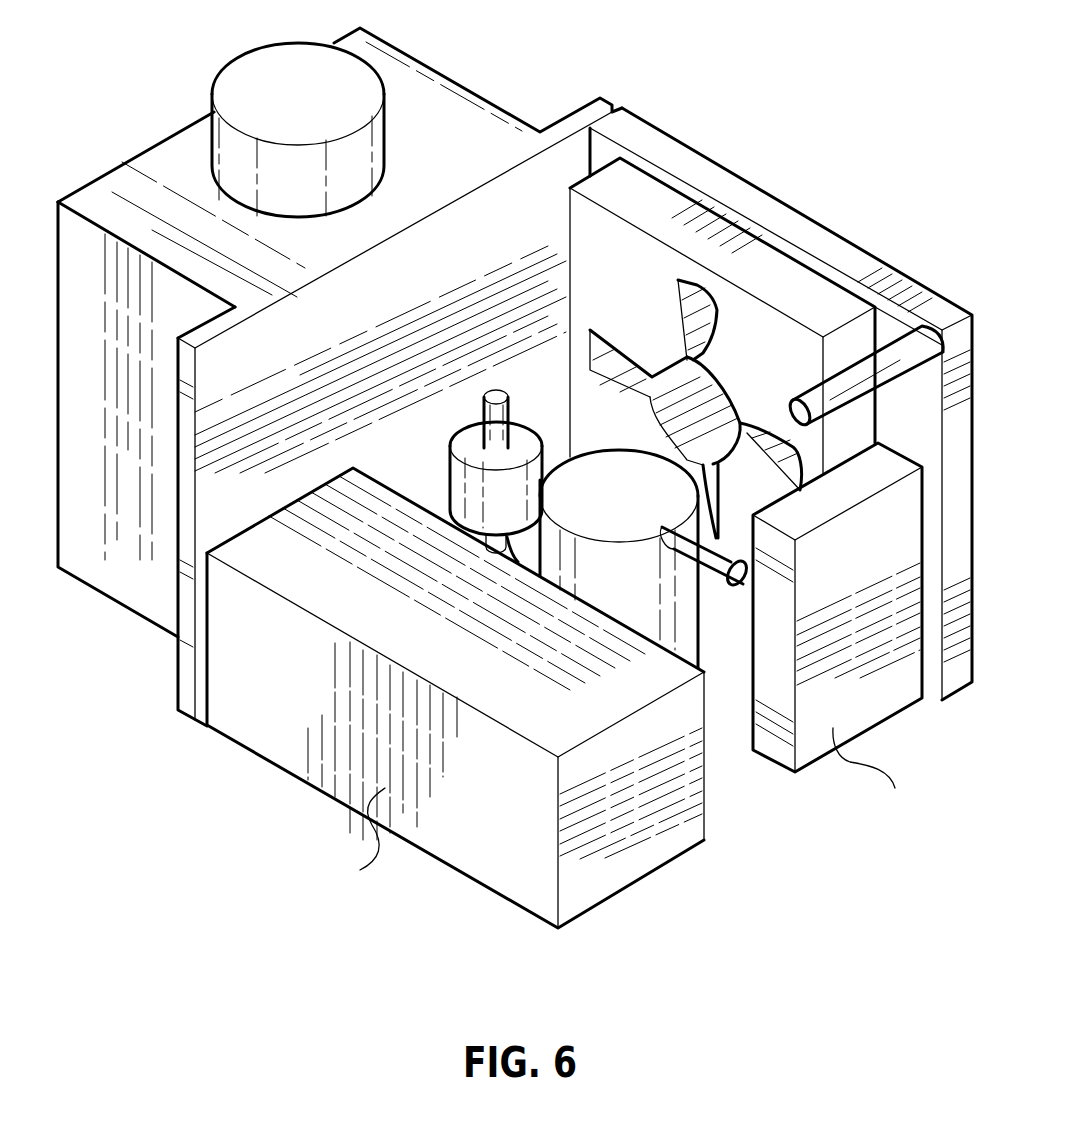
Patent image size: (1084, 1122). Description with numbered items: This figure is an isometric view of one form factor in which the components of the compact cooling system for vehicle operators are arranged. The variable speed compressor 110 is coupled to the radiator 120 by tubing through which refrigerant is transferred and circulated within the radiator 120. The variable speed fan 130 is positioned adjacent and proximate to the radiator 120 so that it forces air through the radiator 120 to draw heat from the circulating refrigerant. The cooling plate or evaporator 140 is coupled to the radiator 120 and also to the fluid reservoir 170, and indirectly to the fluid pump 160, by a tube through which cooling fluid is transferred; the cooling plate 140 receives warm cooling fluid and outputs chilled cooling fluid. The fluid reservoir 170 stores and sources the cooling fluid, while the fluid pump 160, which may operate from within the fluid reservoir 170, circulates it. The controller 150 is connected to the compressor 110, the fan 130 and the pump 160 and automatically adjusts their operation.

The variable speed compressor 110 is at (610, 497).
The radiator 120 is at (797, 228).
The variable speed fan 130 is at (697, 240).
The cooling plate or evaporator 140 is at (400, 837).
The controller 150 is at (795, 773).
The fluid pump 160 is at (175, 465).
The fluid reservoir 170 is at (172, 132).